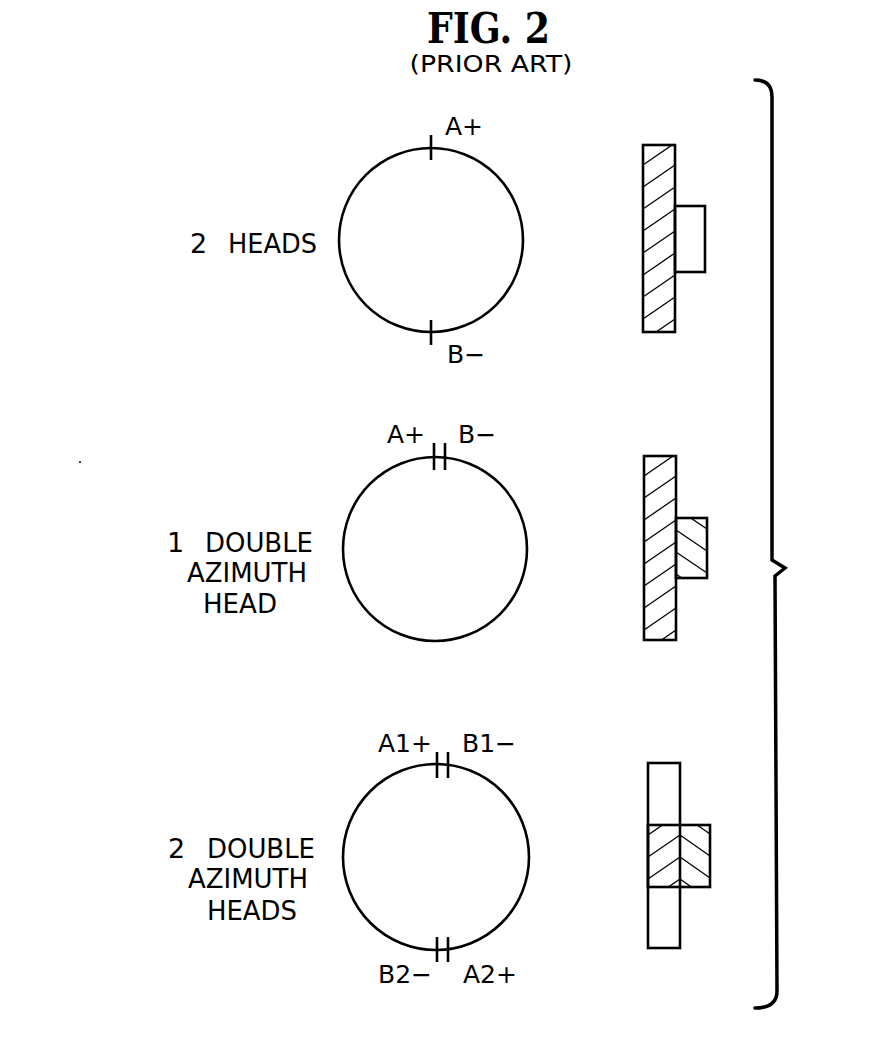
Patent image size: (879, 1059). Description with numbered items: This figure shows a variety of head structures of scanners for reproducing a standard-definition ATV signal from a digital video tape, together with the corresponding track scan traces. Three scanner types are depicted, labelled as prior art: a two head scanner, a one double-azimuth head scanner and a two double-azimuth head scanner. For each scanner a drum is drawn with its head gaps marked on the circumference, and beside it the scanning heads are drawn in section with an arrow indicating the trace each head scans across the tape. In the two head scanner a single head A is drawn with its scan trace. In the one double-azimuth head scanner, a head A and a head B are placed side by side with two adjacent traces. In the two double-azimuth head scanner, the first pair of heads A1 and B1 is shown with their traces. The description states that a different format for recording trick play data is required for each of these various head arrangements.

The head A is at (637, 375).
The head B is at (670, 680).
The head A1 is at (643, 985).
The head B1 is at (673, 985).